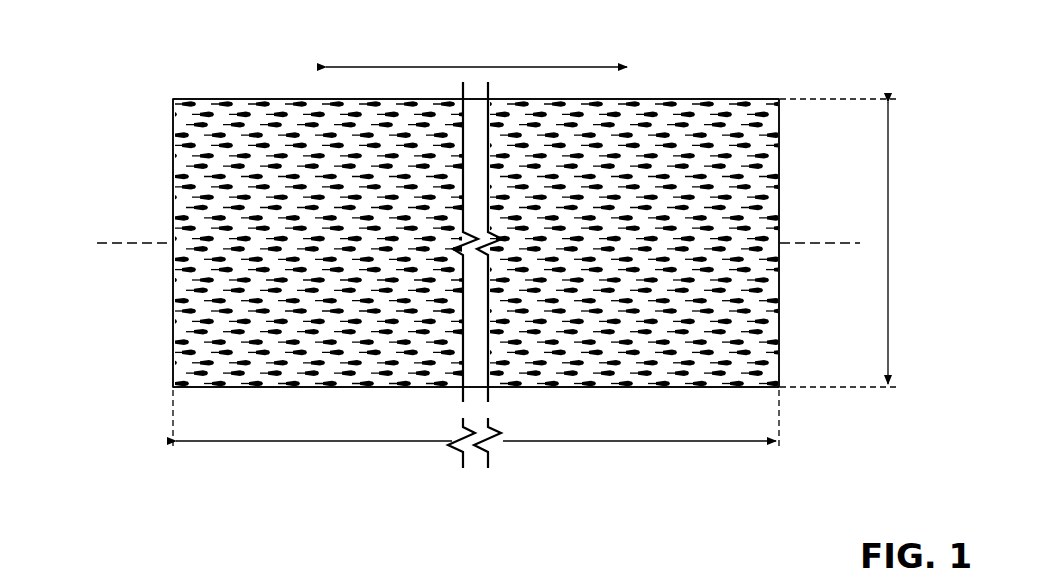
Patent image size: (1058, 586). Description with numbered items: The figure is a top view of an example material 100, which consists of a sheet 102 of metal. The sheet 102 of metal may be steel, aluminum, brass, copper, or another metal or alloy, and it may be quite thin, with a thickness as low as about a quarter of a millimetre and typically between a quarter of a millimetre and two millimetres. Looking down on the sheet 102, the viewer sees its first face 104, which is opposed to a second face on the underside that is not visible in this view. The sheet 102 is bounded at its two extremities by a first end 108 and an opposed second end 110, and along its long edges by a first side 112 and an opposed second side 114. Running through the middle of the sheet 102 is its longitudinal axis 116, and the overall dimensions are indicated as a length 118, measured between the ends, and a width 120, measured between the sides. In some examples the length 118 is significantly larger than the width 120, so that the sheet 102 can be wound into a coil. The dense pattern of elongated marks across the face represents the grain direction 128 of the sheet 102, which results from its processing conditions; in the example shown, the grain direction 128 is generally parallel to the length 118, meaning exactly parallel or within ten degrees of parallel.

The material 100 is at (758, 57).
The sheet of metal 102 is at (772, 140).
The first face 104 is at (180, 285).
The first end 108 is at (778, 340).
The second end 110 is at (172, 147).
The first side 112 is at (253, 98).
The second side 114 is at (288, 388).
The longitudinal axis 116 is at (140, 243).
The length 118 is at (250, 441).
The width 120 is at (892, 338).
The grain direction 128 is at (474, 66).